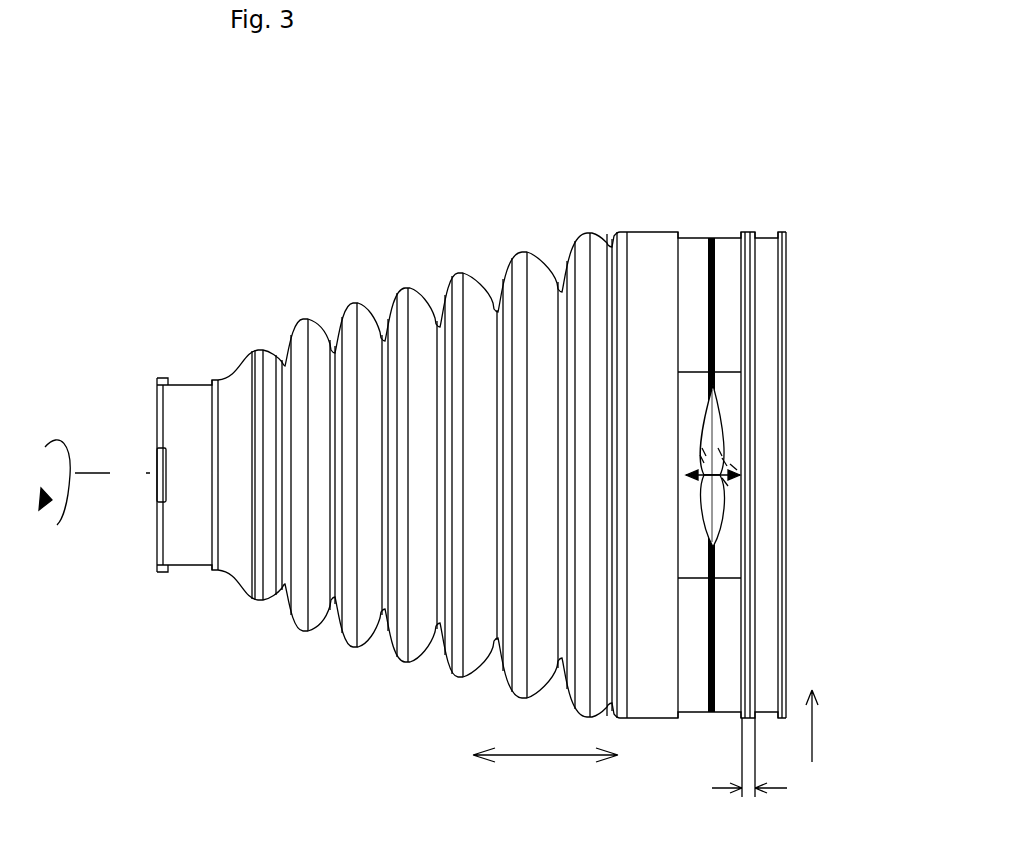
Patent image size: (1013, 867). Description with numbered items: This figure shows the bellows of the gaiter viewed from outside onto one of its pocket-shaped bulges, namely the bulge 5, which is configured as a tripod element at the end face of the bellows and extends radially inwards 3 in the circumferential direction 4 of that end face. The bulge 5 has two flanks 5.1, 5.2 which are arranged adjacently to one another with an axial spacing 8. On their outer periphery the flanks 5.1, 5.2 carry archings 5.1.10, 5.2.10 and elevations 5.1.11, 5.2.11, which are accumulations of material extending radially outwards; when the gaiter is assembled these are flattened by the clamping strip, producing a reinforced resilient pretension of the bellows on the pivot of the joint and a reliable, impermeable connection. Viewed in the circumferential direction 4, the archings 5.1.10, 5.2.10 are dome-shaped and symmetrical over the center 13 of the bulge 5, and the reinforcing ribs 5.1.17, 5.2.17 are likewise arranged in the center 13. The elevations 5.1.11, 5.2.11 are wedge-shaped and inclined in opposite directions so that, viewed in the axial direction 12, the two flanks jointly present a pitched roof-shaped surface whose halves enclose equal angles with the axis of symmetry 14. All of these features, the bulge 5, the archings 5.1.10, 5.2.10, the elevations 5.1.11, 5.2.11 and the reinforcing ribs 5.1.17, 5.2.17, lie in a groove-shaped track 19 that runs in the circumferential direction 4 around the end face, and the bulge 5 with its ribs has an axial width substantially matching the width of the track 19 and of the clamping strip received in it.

The radially inwards direction 3 is at (824, 726).
The circumferential direction 4 is at (58, 427).
The bulge 5 is at (718, 540).
The flank 5.1 is at (720, 512).
The arching 5.1.10 is at (718, 455).
The elevation 5.1.11 is at (736, 468).
The reinforcing rib 5.1.17 is at (726, 482).
The flank 5.2 is at (708, 442).
The arching 5.2.10 is at (701, 456).
The elevation 5.2.11 is at (697, 460).
The reinforcing rib 5.2.17 is at (728, 463).
The axial spacing 8 is at (749, 774).
The axial direction 12 is at (545, 773).
The center of the bulge 13 is at (693, 478).
The axis of symmetry 14 is at (98, 473).
The track 19 is at (697, 226).